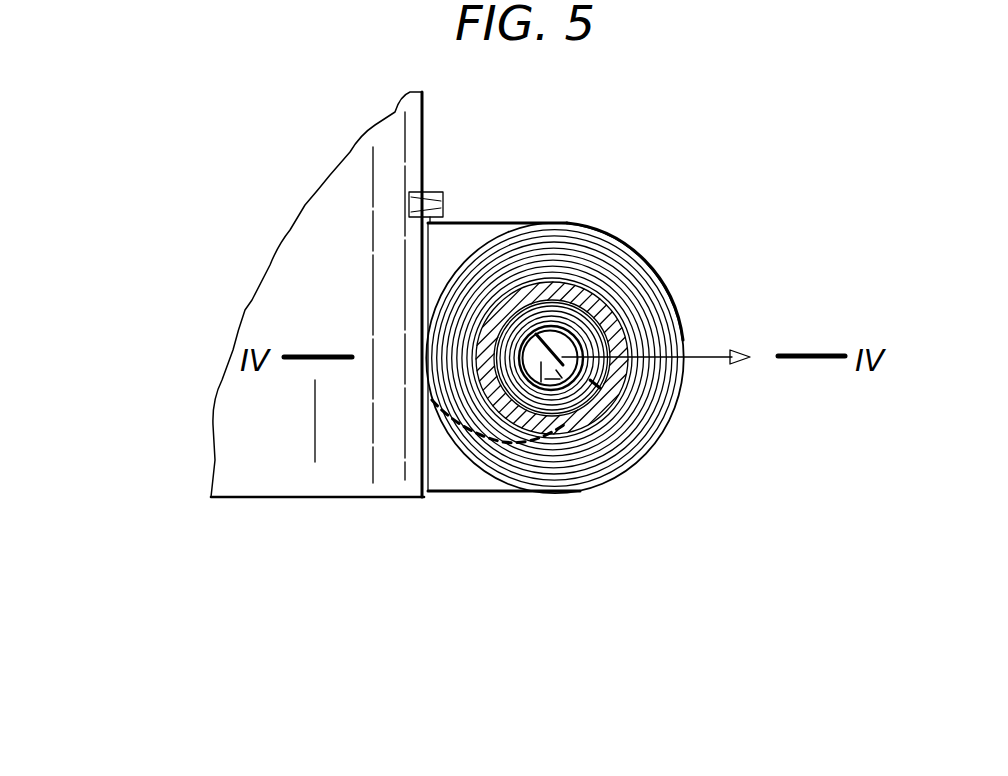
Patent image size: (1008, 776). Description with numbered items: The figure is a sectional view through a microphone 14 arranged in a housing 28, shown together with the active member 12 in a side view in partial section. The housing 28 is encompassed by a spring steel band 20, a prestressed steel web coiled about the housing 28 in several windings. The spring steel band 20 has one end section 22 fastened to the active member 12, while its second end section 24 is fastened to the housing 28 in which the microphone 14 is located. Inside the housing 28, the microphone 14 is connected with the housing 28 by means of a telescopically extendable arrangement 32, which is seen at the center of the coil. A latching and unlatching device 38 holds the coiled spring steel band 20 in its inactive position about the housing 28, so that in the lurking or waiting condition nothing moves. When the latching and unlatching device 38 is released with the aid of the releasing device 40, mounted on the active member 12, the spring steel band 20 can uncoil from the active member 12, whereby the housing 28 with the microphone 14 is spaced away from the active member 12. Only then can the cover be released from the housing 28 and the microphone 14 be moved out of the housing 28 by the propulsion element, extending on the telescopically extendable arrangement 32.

The active member 12 is at (333, 265).
The microphone 14 is at (552, 412).
The spring steel band 20 is at (617, 282).
The end section 22 is at (424, 368).
The second end section 24 is at (520, 290).
The housing 28 is at (613, 317).
The telescopically extendable arrangement 32 is at (593, 383).
The latching and unlatching device 38 is at (526, 218).
The releasing device 40 is at (440, 188).